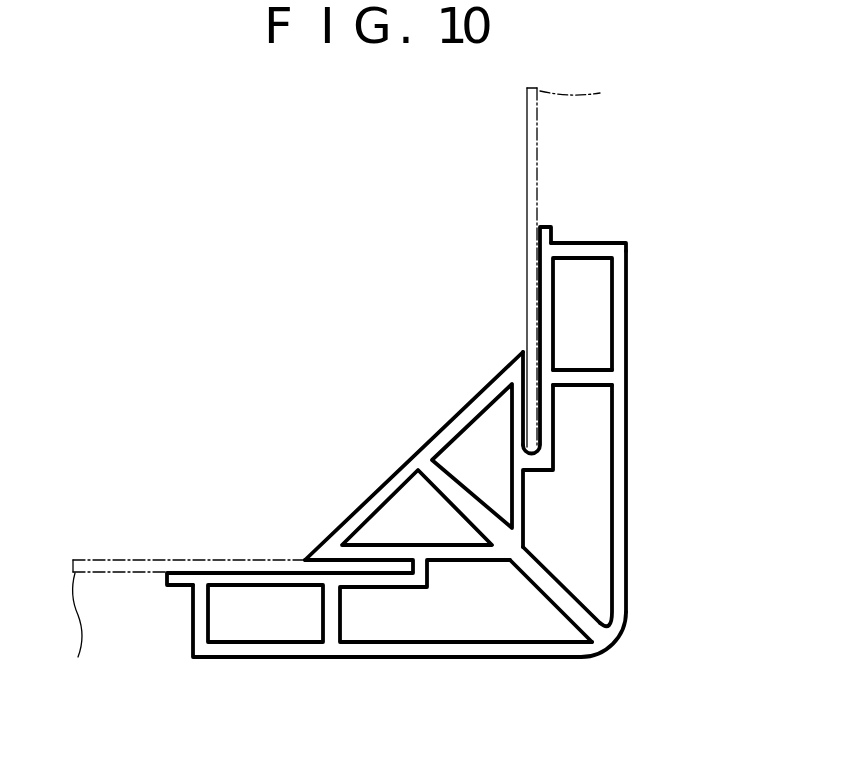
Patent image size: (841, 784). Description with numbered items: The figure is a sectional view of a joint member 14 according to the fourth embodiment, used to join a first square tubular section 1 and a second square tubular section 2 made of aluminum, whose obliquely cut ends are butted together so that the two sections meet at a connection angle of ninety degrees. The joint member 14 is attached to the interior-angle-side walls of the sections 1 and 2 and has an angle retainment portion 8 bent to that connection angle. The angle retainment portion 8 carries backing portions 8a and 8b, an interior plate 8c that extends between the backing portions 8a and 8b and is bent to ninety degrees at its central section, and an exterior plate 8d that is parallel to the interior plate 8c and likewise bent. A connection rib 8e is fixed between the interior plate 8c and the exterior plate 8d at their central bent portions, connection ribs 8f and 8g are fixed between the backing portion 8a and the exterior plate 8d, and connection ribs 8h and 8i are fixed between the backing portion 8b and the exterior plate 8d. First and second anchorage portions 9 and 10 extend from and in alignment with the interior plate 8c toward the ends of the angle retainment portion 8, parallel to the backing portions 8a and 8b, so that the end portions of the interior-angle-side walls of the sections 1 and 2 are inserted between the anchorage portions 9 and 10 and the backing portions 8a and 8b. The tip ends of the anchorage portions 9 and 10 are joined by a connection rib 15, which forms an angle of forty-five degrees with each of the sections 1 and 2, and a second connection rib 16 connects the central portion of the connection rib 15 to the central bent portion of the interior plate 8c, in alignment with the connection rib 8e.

The first square tubular section 1 is at (135, 561).
The second square tubular section 2 is at (530, 168).
The angle retainment portion 8 is at (630, 583).
The backing portion 8a is at (238, 576).
The backing portion 8b is at (543, 278).
The interior plate 8c is at (523, 508).
The exterior plate 8d is at (618, 466).
The connection rib 8e is at (568, 601).
The connection rib 8f is at (202, 616).
The connection rib 8g is at (336, 613).
The connection rib 8h is at (581, 376).
The connection rib 8i is at (587, 249).
The first anchorage portion 9 is at (368, 553).
The second anchorage portion 10 is at (514, 411).
The joint member 14 is at (630, 522).
The connection rib 15 is at (406, 467).
The second connection rib 16 is at (455, 493).